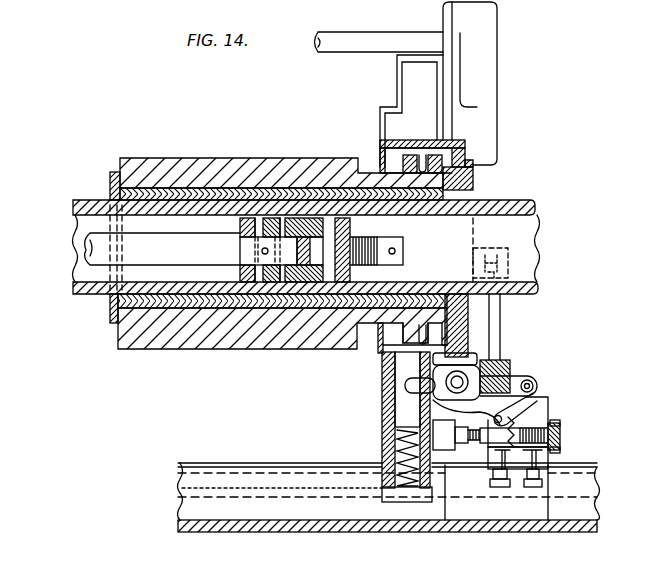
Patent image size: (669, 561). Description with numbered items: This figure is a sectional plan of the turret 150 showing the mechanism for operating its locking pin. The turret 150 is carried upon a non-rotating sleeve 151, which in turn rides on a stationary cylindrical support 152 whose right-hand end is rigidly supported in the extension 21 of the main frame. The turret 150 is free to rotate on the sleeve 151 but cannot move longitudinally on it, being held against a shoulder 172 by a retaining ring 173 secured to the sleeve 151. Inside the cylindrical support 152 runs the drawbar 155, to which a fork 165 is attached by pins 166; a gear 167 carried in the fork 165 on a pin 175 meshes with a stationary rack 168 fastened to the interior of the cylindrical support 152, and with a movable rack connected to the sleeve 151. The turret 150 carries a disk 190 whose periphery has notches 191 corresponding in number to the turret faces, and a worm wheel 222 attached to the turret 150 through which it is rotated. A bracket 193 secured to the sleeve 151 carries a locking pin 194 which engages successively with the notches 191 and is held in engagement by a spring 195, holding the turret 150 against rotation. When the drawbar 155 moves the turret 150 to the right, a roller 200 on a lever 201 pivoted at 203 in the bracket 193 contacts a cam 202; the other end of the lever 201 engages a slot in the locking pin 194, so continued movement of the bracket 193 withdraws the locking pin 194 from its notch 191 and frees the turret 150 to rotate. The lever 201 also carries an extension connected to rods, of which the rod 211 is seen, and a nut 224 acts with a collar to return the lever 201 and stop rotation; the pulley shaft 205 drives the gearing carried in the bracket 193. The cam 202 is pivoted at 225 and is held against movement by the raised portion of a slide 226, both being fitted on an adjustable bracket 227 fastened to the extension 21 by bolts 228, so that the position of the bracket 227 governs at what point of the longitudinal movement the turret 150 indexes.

The extension 21 is at (585, 505).
The turret 150 is at (252, 160).
The non-rotating sleeve 151 is at (168, 192).
The cylindrical support 152 is at (77, 218).
The drawbar 155 is at (191, 249).
The fork 165 is at (352, 225).
The pins 166 is at (280, 362).
The gear 167 is at (396, 254).
The stationary rack 168 is at (402, 242).
The shoulder 172 is at (475, 183).
The retaining ring 173 is at (110, 175).
The pin 175 is at (327, 276).
The disk 190 is at (400, 165).
The notches 191 is at (400, 343).
The bracket 193 is at (487, 112).
The locking pin 194 is at (407, 405).
The spring 195 is at (400, 437).
The roller 200 is at (545, 392).
The lever 201 is at (527, 380).
The cam 202 is at (540, 402).
The pivot 203 is at (488, 365).
The shaft 205 is at (332, 37).
The rod 211 is at (503, 308).
The worm wheel 222 is at (474, 164).
The nut 224 is at (554, 353).
The pivot 225 is at (505, 417).
The slide 226 is at (553, 423).
The adjustable bracket 227 is at (545, 460).
The bolts 228 is at (532, 483).